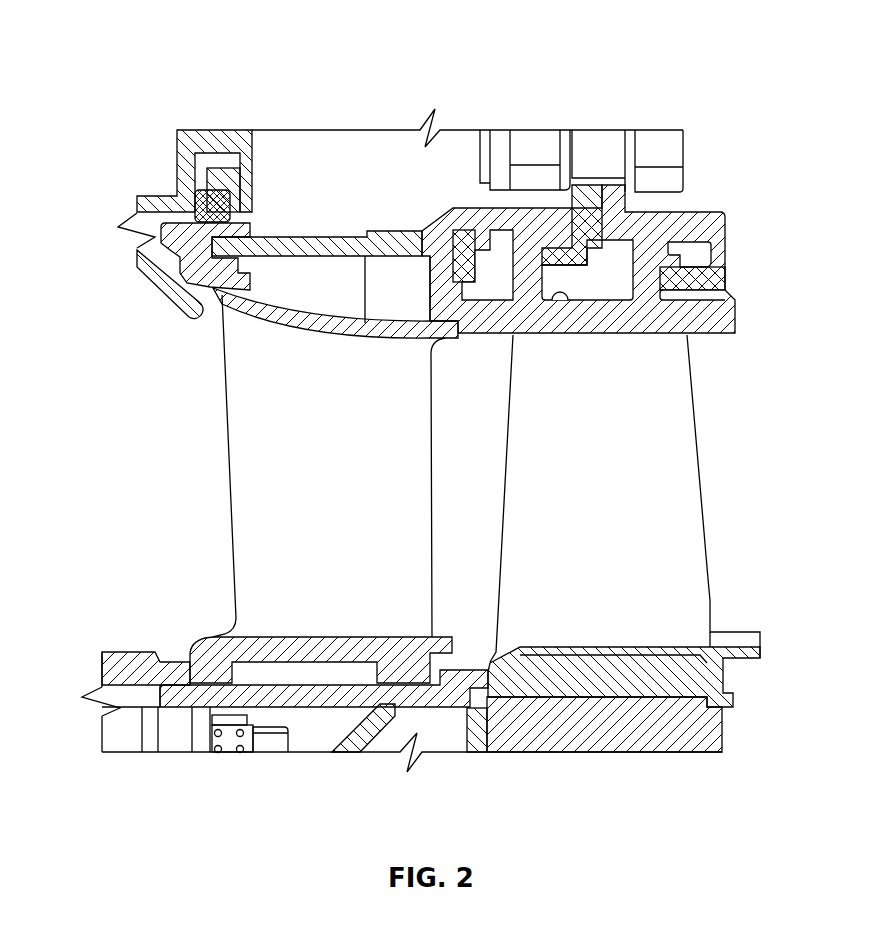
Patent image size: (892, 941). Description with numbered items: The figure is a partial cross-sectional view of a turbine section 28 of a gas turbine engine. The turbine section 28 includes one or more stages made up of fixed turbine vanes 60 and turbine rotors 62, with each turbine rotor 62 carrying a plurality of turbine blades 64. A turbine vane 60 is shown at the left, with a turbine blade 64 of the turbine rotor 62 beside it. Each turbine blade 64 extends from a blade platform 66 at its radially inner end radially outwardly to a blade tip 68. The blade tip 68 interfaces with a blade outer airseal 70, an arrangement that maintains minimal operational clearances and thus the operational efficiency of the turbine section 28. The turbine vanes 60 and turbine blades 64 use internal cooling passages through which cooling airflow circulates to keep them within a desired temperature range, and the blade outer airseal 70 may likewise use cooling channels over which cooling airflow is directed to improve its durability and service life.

The turbine section 28 is at (140, 50).
The turbine vane 60 is at (345, 487).
The turbine rotor 62 is at (640, 581).
The turbine blade 64 is at (613, 491).
The blade platform 66 is at (600, 657).
The blade tip 68 is at (581, 293).
The blade outer airseal 70 is at (708, 318).